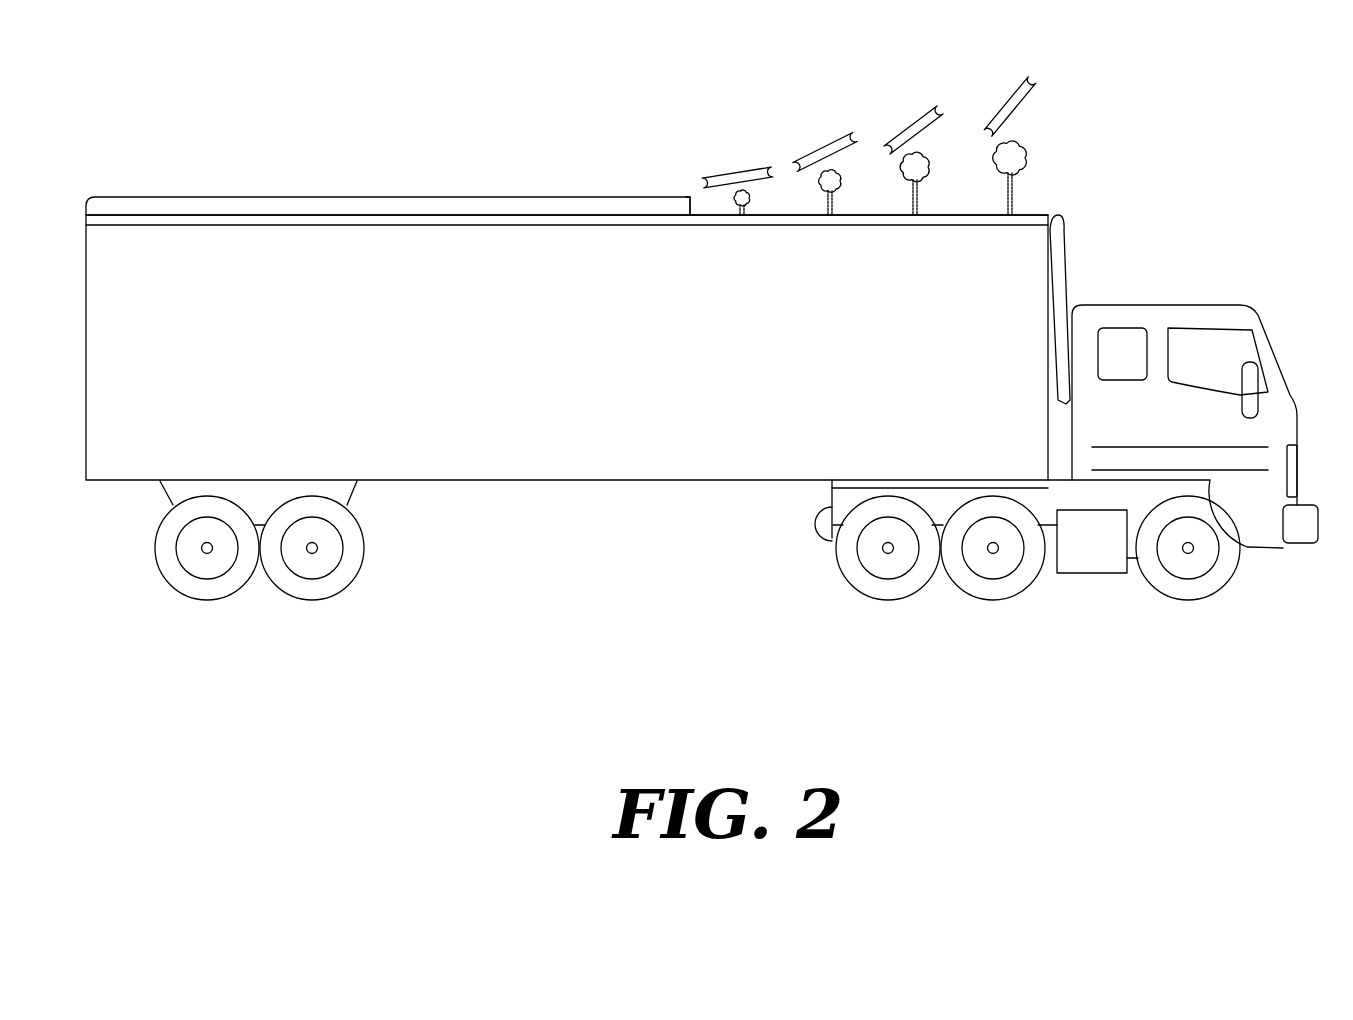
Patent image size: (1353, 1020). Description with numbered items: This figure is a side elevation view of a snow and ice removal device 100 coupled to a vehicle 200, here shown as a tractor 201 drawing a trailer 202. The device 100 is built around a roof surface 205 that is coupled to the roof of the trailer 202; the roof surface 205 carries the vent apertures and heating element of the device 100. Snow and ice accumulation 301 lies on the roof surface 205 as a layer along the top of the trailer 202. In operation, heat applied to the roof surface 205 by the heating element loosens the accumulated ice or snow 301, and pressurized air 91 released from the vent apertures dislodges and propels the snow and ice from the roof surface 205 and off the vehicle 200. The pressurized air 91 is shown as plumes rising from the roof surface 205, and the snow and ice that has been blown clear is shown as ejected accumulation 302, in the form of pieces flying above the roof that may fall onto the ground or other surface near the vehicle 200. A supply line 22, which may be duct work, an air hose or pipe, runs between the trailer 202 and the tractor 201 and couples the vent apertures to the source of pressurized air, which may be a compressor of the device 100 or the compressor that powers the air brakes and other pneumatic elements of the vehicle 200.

The vehicle 200 is at (702, 340).
The tractor 201 is at (1193, 415).
The trailer 202 is at (507, 412).
The roof surface 205 is at (700, 216).
The snow and ice removal device 100 is at (769, 220).
The snow and ice accumulation 301 is at (378, 208).
The ejected accumulation 302 is at (738, 178).
The pressurized air 91 is at (736, 193).
The supply line 22 is at (1065, 270).